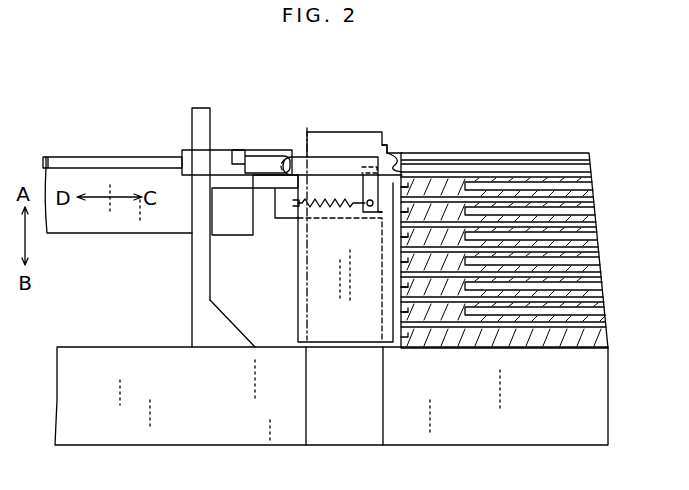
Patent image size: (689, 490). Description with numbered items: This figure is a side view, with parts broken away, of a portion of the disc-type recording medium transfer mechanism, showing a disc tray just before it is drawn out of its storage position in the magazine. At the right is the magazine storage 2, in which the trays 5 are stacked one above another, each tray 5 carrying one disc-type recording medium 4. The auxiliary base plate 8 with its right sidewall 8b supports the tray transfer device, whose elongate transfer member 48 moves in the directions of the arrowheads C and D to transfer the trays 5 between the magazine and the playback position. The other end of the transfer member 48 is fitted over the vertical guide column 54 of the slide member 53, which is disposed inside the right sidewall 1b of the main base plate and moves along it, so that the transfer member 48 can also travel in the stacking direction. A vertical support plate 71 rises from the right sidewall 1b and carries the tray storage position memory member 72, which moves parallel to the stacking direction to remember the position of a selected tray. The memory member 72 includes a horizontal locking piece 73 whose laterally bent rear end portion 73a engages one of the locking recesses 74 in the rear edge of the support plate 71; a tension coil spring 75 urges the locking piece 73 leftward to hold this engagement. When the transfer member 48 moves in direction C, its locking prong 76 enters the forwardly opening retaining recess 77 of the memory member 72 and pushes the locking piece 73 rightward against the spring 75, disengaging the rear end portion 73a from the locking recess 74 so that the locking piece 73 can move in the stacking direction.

The right sidewall 1b is at (95, 360).
The magazine storage 2 is at (501, 153).
The disc-type recording medium 4 is at (605, 310).
The disc-type recording medium trays 5 is at (398, 310).
The auxiliary base plate 8 is at (88, 157).
The right sidewall of auxiliary base plate 8b is at (90, 222).
The transfer member 48 is at (182, 175).
The slide member 53 is at (200, 322).
The guide column 54 is at (210, 118).
The vertical support plate 71 is at (377, 418).
The tray storage position memory member 72 is at (298, 293).
The locking piece 73 is at (318, 128).
The rear end portion 73a is at (393, 155).
The locking recesses 74 is at (385, 147).
The tension coil spring 75 is at (318, 212).
The locking prong 76 is at (238, 158).
The retaining recess 77 is at (257, 186).